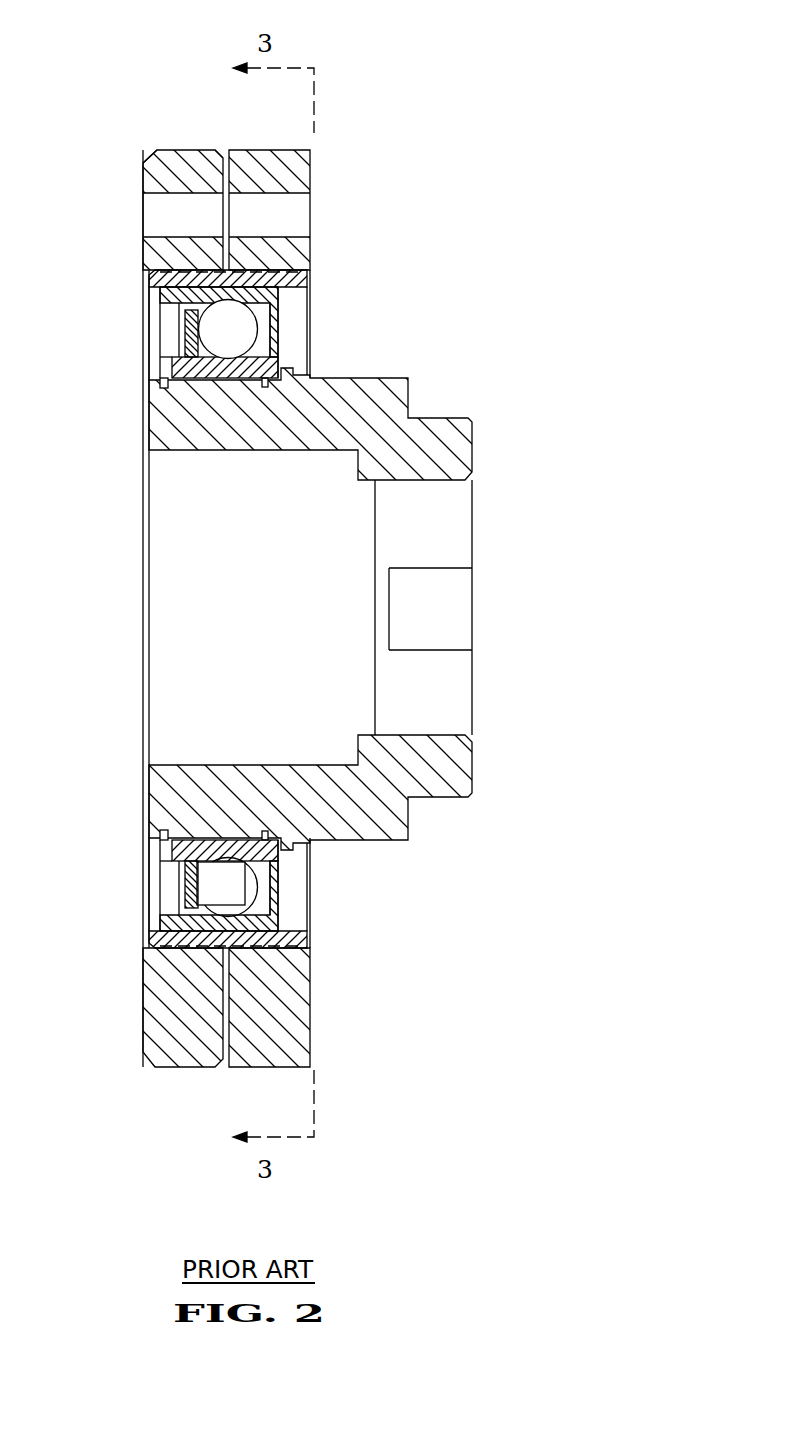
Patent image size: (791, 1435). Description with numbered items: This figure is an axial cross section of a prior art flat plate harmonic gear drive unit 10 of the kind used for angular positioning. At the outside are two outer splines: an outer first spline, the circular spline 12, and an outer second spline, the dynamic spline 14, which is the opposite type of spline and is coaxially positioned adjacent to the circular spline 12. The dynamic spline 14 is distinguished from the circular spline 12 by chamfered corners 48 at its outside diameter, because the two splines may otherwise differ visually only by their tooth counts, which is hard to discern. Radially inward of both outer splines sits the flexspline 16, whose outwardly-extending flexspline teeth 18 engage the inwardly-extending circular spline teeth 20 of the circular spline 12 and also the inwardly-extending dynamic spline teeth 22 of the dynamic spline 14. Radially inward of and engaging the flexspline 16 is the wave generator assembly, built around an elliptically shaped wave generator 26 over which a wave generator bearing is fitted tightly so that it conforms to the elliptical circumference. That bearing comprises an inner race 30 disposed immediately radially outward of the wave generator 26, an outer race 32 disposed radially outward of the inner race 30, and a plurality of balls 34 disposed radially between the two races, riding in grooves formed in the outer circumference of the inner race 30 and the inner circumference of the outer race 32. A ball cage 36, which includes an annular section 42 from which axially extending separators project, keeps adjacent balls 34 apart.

The harmonic gear drive unit 10 is at (356, 93).
The circular spline 12 is at (305, 163).
The dynamic spline 14 is at (183, 150).
The chamfered corners 48 is at (152, 161).
The flexspline 16 is at (273, 932).
The flexspline teeth 18 is at (168, 267).
The circular spline teeth 20 is at (305, 933).
The dynamic spline teeth 22 is at (155, 930).
The wave generator 26 is at (152, 785).
The inner race 30 is at (187, 368).
The outer race 32 is at (192, 293).
The balls 34 is at (250, 328).
The ball cage 36 is at (176, 864).
The annular section 42 is at (188, 887).